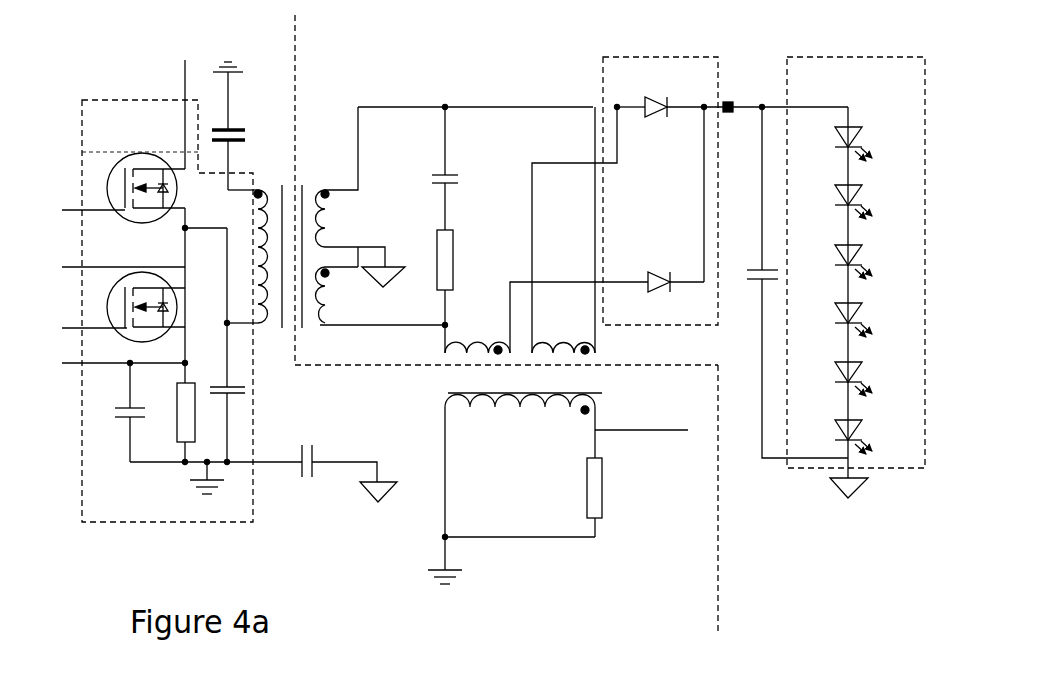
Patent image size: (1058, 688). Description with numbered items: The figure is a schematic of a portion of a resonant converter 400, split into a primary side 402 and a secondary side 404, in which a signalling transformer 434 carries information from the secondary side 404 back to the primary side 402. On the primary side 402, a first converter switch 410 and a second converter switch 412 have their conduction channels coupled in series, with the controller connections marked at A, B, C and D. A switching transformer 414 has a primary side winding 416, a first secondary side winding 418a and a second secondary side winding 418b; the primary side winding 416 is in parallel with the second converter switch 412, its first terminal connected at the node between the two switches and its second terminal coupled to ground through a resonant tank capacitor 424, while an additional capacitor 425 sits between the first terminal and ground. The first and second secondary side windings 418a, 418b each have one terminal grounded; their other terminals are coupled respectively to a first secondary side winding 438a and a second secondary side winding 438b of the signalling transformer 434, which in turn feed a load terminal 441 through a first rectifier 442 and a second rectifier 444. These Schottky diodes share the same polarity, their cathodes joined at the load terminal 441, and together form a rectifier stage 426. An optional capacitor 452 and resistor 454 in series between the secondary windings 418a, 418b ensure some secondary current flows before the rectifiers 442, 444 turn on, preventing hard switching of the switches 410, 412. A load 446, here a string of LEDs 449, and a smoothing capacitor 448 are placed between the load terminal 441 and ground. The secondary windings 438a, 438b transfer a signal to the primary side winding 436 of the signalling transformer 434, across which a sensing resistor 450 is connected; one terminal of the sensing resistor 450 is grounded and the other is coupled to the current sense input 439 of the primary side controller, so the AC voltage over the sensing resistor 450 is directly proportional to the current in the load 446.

The resonant converter 400 is at (165, 546).
The primary side 402 is at (682, 637).
The secondary side 404 is at (819, 637).
The first converter switch 410 is at (137, 153).
The second converter switch 412 is at (107, 302).
The switching transformer 414 is at (291, 182).
The primary side winding 416 is at (258, 190).
The first secondary side winding 418a is at (321, 190).
The second secondary side winding 418b is at (328, 272).
The resonant tank capacitor 424 is at (239, 124).
The additional capacitor 425 is at (232, 395).
The rectifier stage 426 is at (601, 54).
The signalling transformer 434 is at (493, 424).
The primary side winding 436 is at (579, 410).
The first secondary side winding 438a is at (598, 356).
The second secondary side winding 438b is at (445, 353).
The current sense input 439 is at (595, 522).
The load terminal 441 is at (726, 102).
The first rectifier 442 is at (667, 104).
The second rectifier 444 is at (645, 278).
The load 446 is at (786, 54).
The smoothing capacitor 448 is at (753, 282).
The string of LEDs 449 is at (856, 430).
The sensing resistor 450 is at (627, 432).
The capacitor 452 is at (453, 175).
The resistor 454 is at (437, 290).